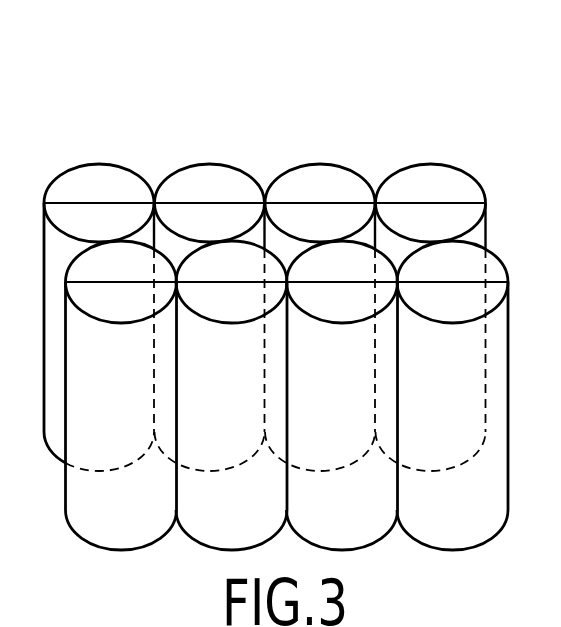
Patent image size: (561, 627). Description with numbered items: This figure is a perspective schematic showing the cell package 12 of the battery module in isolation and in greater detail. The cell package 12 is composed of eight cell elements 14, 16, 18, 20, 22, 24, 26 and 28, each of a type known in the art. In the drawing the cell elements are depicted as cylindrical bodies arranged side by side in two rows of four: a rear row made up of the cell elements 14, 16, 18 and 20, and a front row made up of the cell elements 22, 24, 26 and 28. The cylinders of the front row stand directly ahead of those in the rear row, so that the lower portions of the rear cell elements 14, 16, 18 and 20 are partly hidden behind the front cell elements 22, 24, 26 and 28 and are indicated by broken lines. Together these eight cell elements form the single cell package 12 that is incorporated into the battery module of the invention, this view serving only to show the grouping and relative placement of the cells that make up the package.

The cell package 12 is at (378, 86).
The cell element 14 is at (98, 179).
The cell element 16 is at (209, 179).
The cell element 18 is at (317, 179).
The cell element 20 is at (427, 179).
The cell element 22 is at (140, 521).
The cell element 24 is at (250, 521).
The cell element 26 is at (360, 521).
The cell element 28 is at (470, 521).